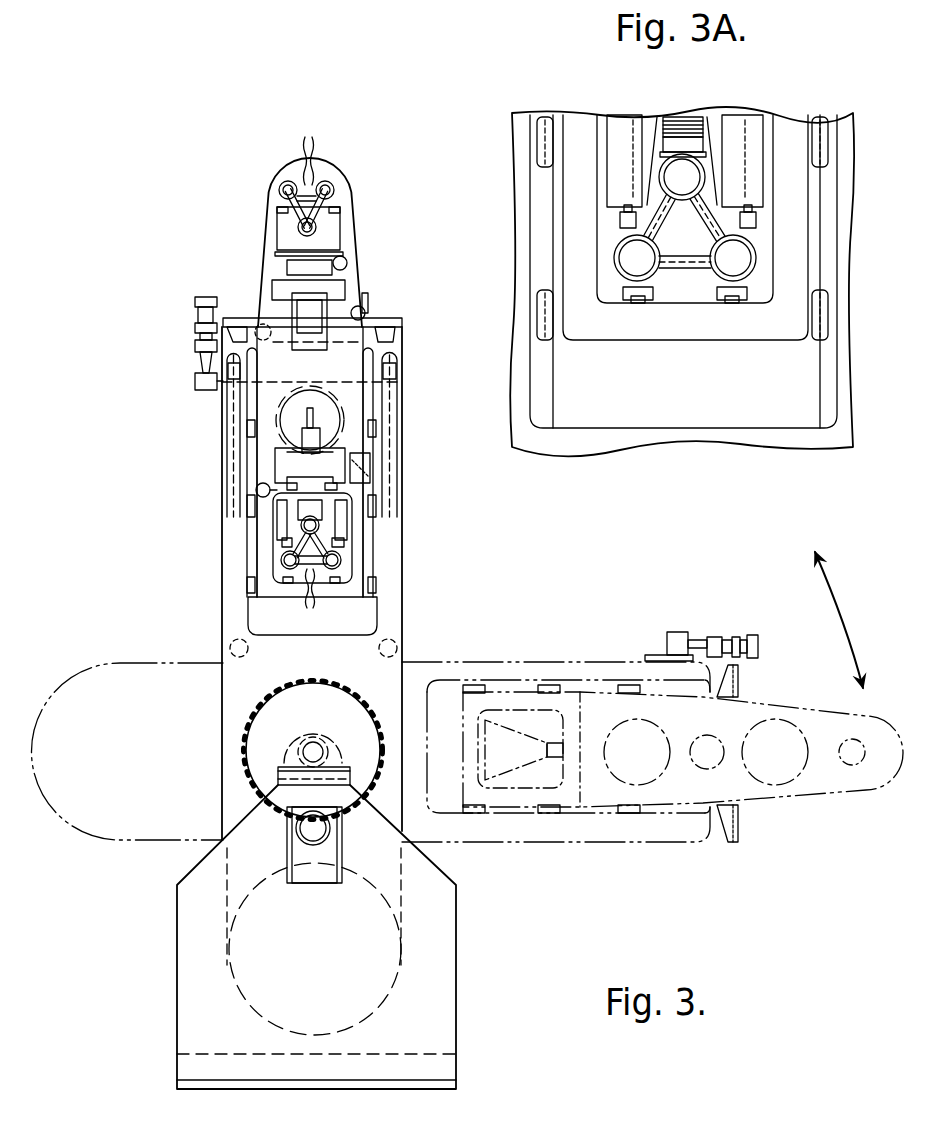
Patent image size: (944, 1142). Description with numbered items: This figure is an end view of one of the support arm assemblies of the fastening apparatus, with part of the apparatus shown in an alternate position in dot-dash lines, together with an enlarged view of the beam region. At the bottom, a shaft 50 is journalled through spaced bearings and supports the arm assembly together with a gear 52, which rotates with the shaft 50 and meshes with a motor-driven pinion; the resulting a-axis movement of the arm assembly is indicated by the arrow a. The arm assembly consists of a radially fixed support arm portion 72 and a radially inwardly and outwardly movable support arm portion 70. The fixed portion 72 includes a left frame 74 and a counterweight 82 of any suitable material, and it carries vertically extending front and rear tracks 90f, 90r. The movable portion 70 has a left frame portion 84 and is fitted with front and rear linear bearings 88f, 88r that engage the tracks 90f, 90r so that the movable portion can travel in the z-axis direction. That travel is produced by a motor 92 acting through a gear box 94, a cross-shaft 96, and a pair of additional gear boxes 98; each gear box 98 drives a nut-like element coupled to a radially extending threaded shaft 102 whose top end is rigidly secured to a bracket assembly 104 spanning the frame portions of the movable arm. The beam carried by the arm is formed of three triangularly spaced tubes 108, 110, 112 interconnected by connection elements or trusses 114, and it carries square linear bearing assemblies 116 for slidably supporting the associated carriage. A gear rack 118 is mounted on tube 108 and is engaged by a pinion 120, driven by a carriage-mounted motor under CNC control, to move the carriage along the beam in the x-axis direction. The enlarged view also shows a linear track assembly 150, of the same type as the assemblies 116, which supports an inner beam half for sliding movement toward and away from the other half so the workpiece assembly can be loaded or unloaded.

In FIG. 3, the shaft 50 is at (315, 742).
In FIG. 3, the gear 52 is at (258, 708).
In FIG. 3, the radially inwardly and outwardly movable support arm portion 70 is at (375, 242).
In FIG. 3, the radially fixed support arm portion 72 is at (414, 606).
In FIG. 3, the left frame 74 is at (403, 675).
In FIG. 3, the counterweight 82 is at (345, 863).
In FIG. 3, the left frame portion 84 is at (358, 218).
In FIG. 3, the rear linear bearing 88r is at (235, 492).
In FIG. 3, the front linear bearing 88f is at (380, 493).
In FIG. 3, the rear track 90r is at (245, 553).
In FIG. 3, the front track 90f is at (375, 567).
In FIG. 3, the motor 92 is at (195, 341).
In FIG. 3, the gear box 94 is at (195, 382).
In FIG. 3, the cross-shaft 96 is at (310, 383).
In FIG. 3, the gear box 98 is at (217, 403).
In FIG. 3, the threaded shaft 102 is at (220, 300).
In FIG. 3, the bracket assembly 104 is at (258, 313).
In FIG. 3, the tube 108 is at (297, 225).
In FIG. 3A, the tube 108 is at (705, 183).
In FIG. 3, the tube 110 is at (283, 181).
In FIG. 3A, the tube 110 is at (756, 255).
In FIG. 3, the tube 112 is at (330, 180).
In FIG. 3A, the tube 112 is at (612, 262).
In FIG. 3, the connection element or truss 114 is at (310, 373).
In FIG. 3A, the connection element or truss 114 is at (657, 197).
In FIG. 3, the square linear bearing assembly 116 is at (275, 538).
In FIG. 3A, the square linear bearing assembly 116 is at (620, 217).
In FIG. 3, the gear rack 118 is at (318, 518).
In FIG. 3A, the gear rack 118 is at (700, 138).
In FIG. 3A, the pinion 120 is at (685, 113).
In FIG. 3A, the linear track assembly 150 is at (742, 304).
In FIG. 3, the a-axis movement arrow a is at (838, 598).